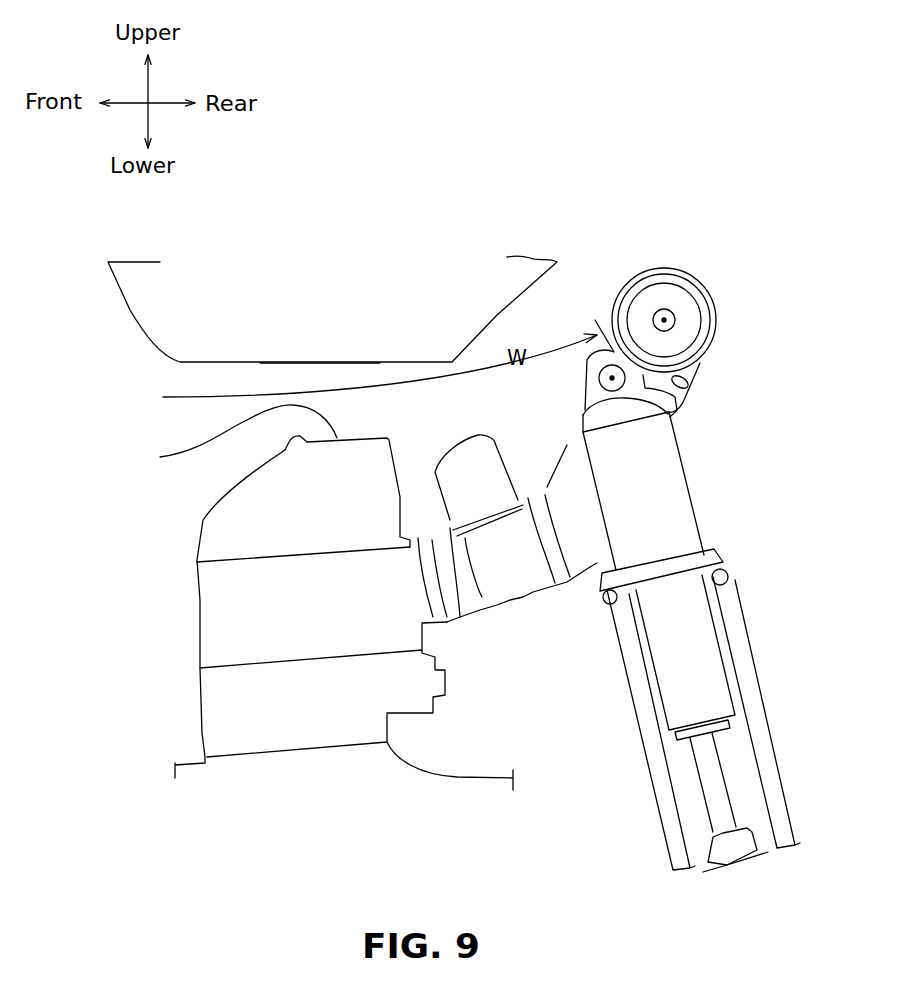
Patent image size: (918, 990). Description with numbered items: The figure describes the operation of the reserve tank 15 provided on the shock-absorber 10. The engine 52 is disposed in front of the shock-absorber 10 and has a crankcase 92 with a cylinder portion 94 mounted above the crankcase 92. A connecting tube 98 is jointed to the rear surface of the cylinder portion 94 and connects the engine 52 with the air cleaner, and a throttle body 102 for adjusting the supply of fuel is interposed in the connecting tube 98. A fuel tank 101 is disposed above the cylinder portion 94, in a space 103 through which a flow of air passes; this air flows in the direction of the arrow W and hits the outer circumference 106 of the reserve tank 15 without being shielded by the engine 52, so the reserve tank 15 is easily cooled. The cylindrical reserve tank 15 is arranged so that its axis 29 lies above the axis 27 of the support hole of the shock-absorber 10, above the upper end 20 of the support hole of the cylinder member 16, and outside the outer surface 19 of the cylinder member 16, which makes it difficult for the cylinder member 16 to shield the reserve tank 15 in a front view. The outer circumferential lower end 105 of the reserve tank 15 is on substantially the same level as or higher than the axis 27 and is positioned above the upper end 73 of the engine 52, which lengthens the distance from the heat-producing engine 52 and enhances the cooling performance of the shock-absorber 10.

The shock-absorber 10 is at (725, 626).
The reserve tank 15 is at (695, 300).
The cylinder member 16 is at (699, 626).
The outer surface of the cylinder member 19 is at (724, 539).
The upper end of the support hole 20 is at (595, 334).
The axis of the support hole 27 is at (672, 434).
The axis of the reserve tank 29 is at (665, 320).
The engine 52 is at (239, 607).
The upper end of the engine 73 is at (160, 457).
The crankcase 92 is at (422, 790).
The cylinder portion 94 is at (250, 618).
The connecting tube 98 is at (562, 573).
The fuel tank 101 is at (147, 303).
The throttle body 102 is at (502, 572).
The space 103 is at (307, 378).
The outer circumferential lower end of the reserve tank 105 is at (690, 392).
The outer circumference of the reserve tank 106 is at (673, 312).